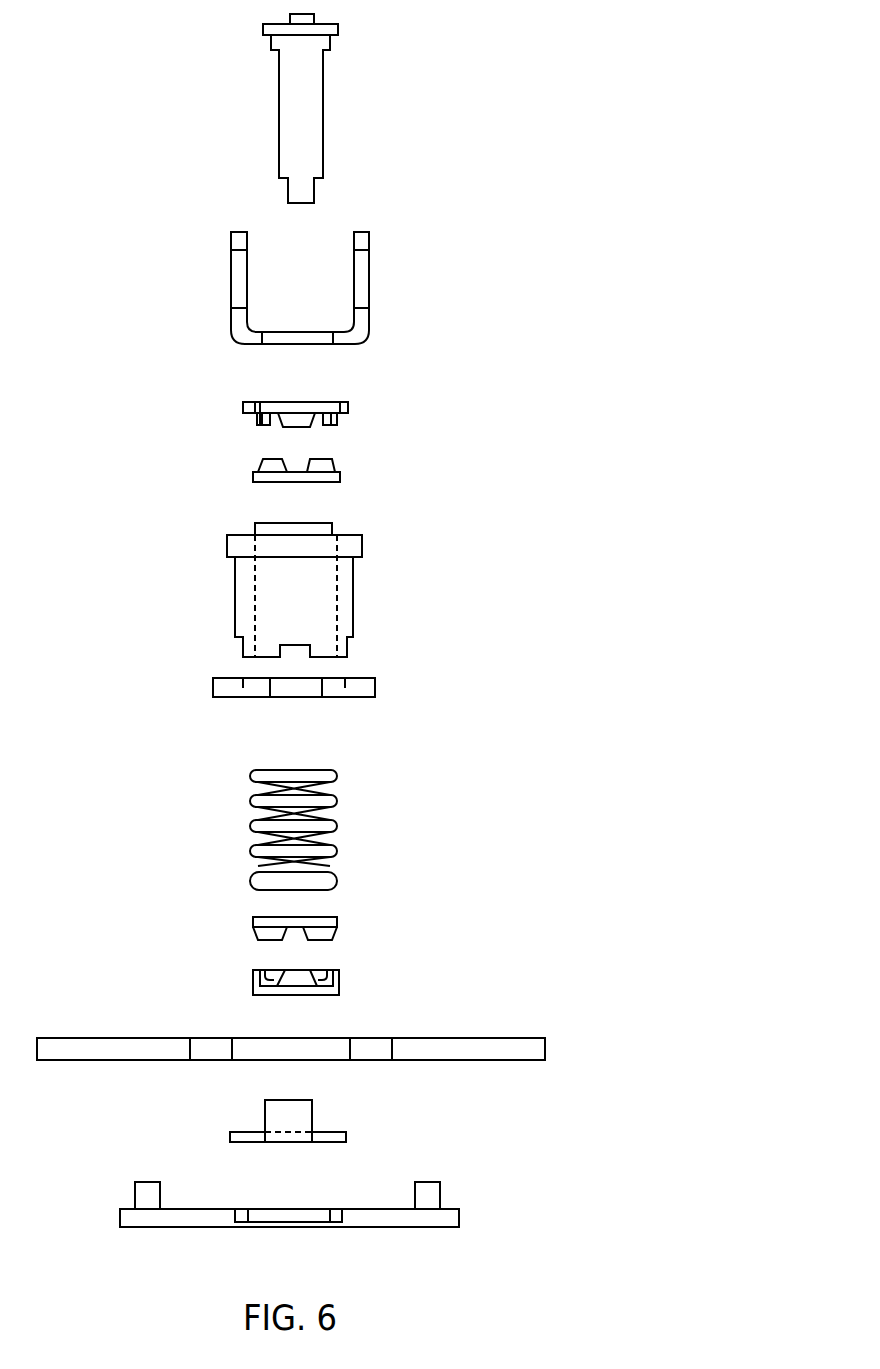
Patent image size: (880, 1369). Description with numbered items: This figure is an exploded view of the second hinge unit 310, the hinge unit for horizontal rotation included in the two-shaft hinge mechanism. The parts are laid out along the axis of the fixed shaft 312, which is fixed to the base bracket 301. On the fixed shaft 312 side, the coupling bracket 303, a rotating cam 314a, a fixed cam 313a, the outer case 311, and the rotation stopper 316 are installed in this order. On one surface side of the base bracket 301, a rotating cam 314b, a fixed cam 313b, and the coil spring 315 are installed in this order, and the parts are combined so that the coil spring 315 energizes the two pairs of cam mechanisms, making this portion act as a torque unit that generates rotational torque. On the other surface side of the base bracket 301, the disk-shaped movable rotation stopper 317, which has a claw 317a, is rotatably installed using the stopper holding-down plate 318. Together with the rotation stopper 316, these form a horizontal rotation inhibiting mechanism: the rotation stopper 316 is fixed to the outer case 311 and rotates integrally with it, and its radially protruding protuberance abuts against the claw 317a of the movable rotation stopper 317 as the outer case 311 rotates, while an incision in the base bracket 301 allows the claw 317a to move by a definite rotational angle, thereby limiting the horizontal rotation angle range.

The second hinge unit 310 is at (568, 622).
The fixed shaft 312 is at (308, 107).
The coupling bracket 303 is at (363, 270).
The rotating cam 314a is at (347, 407).
The fixed cam 313a is at (333, 473).
The outer case 311 is at (342, 595).
The rotation stopper 316 is at (362, 692).
The coil spring 315 is at (337, 828).
The fixed cam 313b is at (330, 923).
The rotating cam 314b is at (333, 990).
The base bracket 301 is at (533, 1050).
The claw 317a is at (312, 1116).
The movable rotation stopper 317 is at (346, 1136).
The stopper holding-down plate 318 is at (459, 1215).